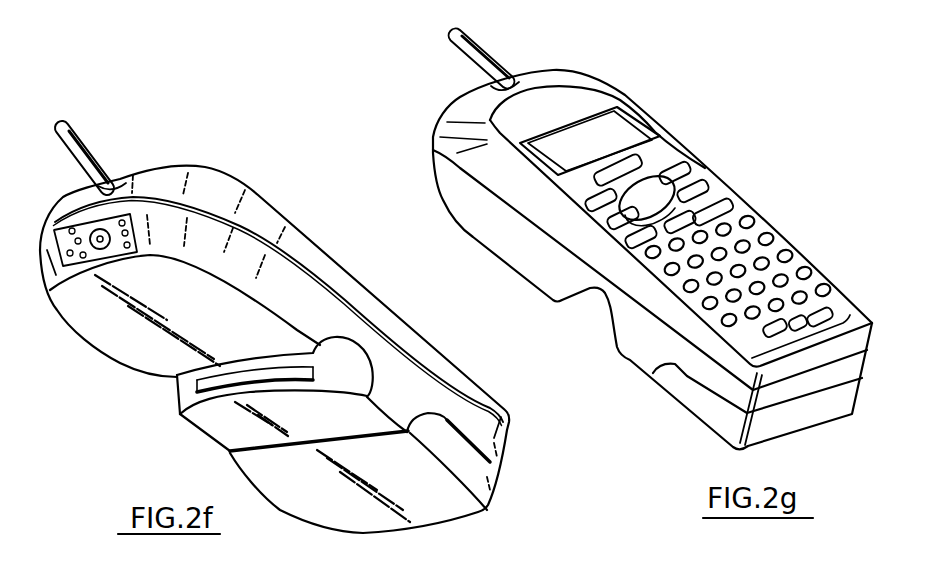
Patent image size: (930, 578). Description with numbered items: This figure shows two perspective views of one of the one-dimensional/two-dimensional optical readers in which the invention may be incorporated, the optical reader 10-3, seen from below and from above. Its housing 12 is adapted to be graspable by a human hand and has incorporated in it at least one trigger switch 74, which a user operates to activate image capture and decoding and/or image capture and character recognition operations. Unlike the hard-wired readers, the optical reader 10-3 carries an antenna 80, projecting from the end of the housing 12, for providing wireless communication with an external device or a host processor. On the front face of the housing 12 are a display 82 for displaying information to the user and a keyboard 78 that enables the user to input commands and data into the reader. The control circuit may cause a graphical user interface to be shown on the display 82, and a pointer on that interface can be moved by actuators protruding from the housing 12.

In FIG. 2f, the optical reader 10-3 is at (230, 140).
In FIG. 2g, the optical reader 10-3 is at (708, 100).
In FIG. 2f, the housing 12 is at (316, 313).
In FIG. 2g, the housing 12 is at (514, 250).
In FIG. 2f, the trigger switch 74 is at (193, 383).
In FIG. 2g, the trigger switch 74 is at (656, 196).
In FIG. 2g, the keyboard 78 is at (800, 336).
In FIG. 2f, the antenna 80 is at (93, 143).
In FIG. 2g, the antenna 80 is at (488, 66).
In FIG. 2g, the display 82 is at (627, 138).